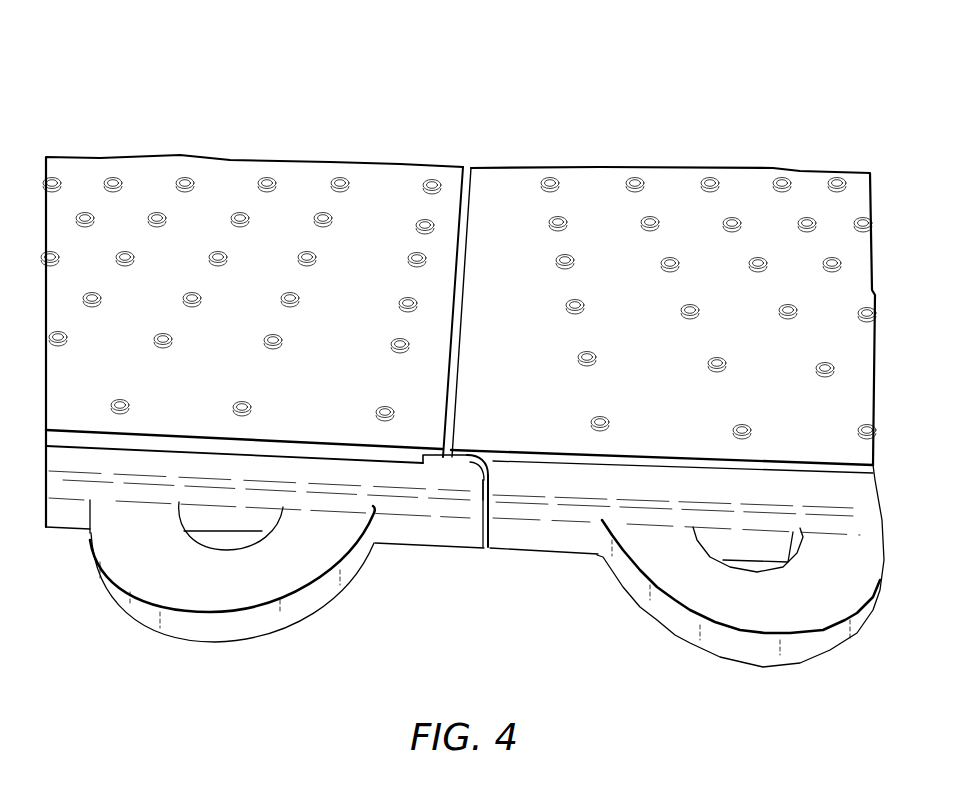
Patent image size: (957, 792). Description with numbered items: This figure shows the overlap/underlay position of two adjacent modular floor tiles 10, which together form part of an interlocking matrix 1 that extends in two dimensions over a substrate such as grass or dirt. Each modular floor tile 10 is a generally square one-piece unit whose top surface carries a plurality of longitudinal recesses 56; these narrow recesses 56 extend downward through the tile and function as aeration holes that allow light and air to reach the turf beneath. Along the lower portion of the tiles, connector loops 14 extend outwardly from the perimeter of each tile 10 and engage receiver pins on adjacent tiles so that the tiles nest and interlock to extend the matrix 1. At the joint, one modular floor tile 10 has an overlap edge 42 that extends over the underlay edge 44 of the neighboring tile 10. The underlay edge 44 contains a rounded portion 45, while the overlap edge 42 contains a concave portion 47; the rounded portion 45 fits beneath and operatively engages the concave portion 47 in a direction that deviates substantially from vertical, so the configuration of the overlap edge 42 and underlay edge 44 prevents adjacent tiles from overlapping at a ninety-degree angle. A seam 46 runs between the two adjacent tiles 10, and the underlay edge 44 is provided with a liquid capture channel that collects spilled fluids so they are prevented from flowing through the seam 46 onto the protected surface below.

The interlocking matrix 1 is at (583, 86).
The modular floor tile 10 is at (257, 311).
The connector loop 14 is at (240, 588).
The overlap edge 42 is at (461, 383).
The underlay edge 44 is at (460, 526).
The rounded portion 45 is at (460, 467).
The seam 46 is at (460, 280).
The concave portion 47 is at (467, 480).
The longitudinal recesses 56 is at (157, 215).